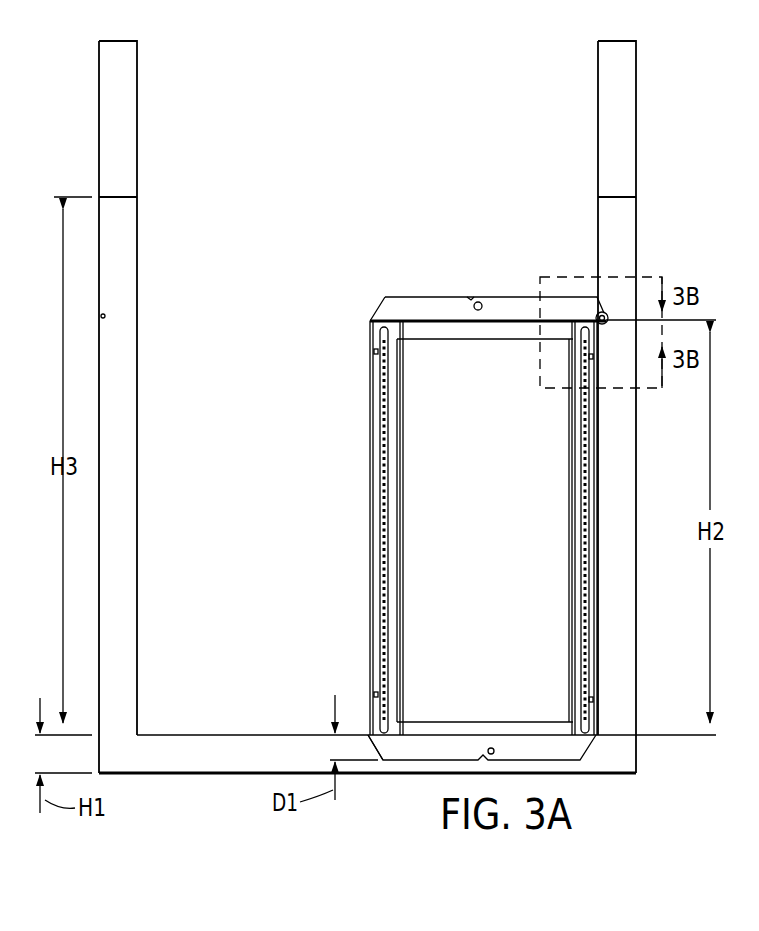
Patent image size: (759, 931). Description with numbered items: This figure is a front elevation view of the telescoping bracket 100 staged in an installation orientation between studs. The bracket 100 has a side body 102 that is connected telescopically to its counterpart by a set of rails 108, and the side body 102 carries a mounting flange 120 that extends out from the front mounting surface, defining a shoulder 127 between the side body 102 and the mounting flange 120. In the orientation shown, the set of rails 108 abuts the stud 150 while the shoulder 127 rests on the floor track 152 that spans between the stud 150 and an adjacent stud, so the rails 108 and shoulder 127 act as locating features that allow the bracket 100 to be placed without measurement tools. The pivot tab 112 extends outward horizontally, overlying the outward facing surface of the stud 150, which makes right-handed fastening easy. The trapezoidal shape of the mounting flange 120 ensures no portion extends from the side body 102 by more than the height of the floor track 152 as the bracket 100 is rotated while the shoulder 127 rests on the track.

The bracket 100 is at (508, 483).
The side body 102 is at (450, 728).
The set of rails 108 is at (582, 465).
The pivot tab 112 is at (605, 313).
The mounting flange 120 is at (568, 752).
The shoulder 127 is at (378, 750).
The stud 150 is at (622, 490).
The floor track 152 is at (233, 747).